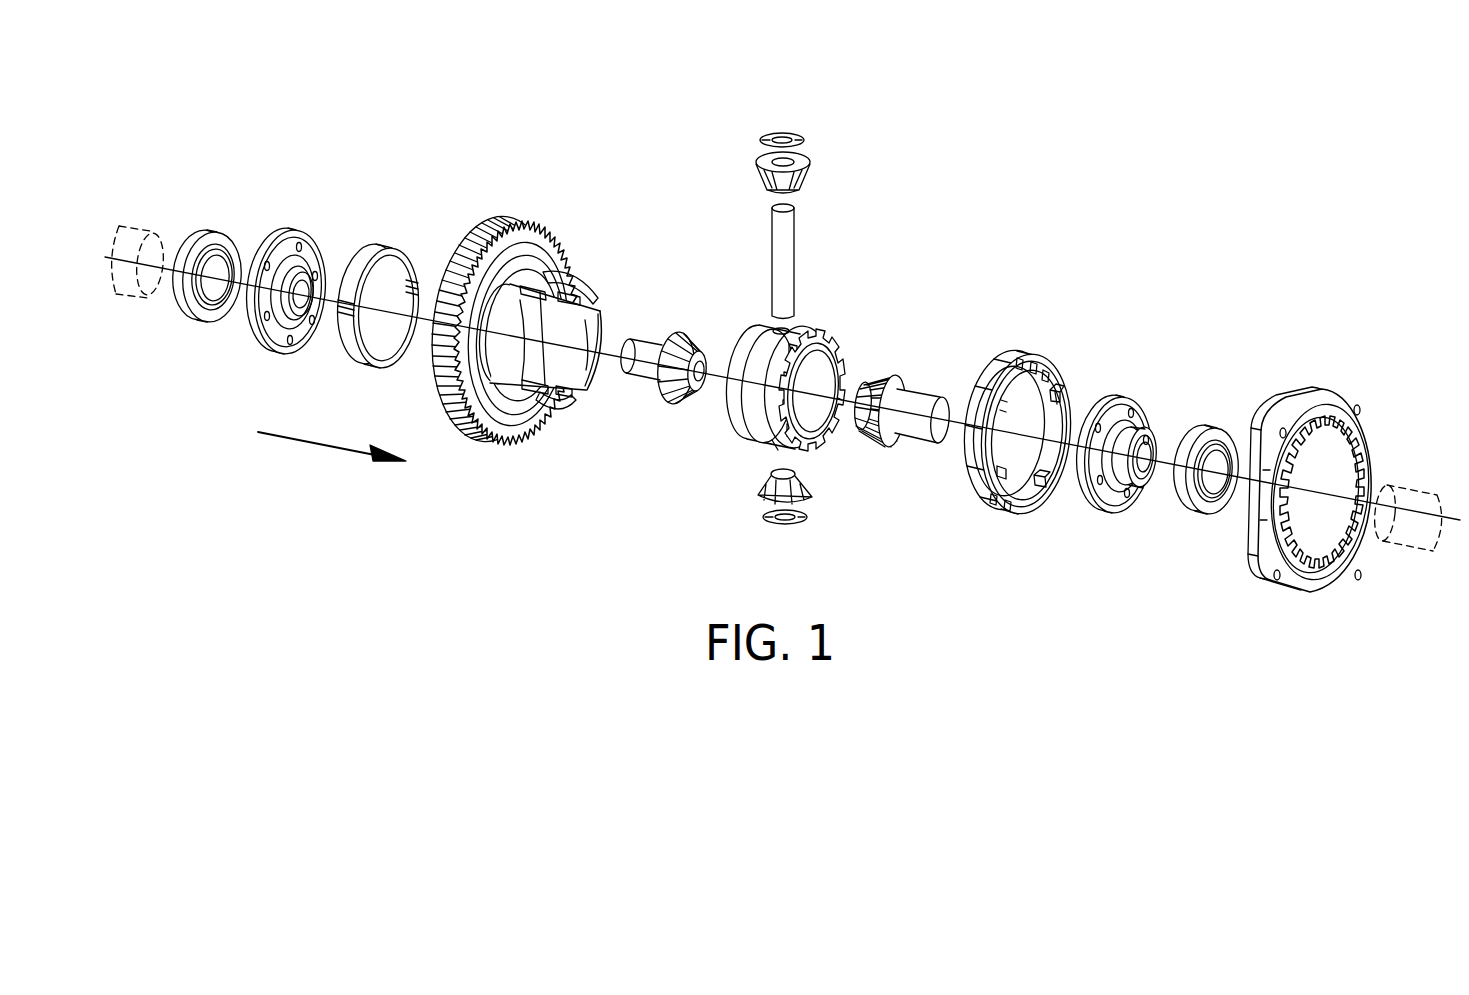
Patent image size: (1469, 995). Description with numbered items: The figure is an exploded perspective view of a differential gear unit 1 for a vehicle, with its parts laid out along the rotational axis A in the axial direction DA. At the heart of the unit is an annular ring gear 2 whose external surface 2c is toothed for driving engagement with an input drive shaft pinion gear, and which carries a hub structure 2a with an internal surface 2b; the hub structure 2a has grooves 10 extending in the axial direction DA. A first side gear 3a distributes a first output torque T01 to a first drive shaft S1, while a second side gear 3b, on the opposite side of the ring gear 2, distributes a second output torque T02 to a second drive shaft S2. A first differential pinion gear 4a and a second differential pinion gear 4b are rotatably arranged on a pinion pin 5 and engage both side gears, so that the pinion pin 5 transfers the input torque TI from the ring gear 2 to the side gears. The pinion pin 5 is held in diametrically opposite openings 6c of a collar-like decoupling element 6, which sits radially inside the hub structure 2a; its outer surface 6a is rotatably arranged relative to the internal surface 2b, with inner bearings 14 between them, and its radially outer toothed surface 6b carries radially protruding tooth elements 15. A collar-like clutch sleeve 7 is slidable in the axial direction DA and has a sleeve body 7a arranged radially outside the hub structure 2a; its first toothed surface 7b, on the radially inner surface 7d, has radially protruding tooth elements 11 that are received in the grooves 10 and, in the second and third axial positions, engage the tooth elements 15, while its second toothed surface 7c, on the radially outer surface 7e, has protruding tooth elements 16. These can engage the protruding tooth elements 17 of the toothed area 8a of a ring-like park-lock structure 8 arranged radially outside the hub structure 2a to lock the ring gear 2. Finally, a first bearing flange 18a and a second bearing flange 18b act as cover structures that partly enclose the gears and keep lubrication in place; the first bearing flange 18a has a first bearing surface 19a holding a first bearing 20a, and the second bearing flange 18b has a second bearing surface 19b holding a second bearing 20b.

The differential gear unit 1 is at (660, 94).
The ring gear 2 is at (548, 304).
The hub structure 2a is at (581, 372).
The internal surface 2b is at (583, 328).
The external surface 2c is at (566, 206).
The first side gear 3a is at (641, 372).
The second side gear 3b is at (908, 425).
The first differential pinion gear 4a is at (808, 160).
The second differential pinion gear 4b is at (812, 497).
The pinion pin 5 is at (785, 262).
The decoupling element 6 is at (805, 379).
The outer surface 6a is at (806, 338).
The radially outer toothed surface 6b is at (770, 432).
The openings 6c is at (782, 335).
The clutch sleeve 7 is at (1060, 433).
The sleeve body 7a is at (988, 367).
The first toothed surface 7b is at (1050, 467).
The second toothed surface 7c is at (1028, 352).
The radially inner surface 7d is at (1022, 497).
The radially outer surface 7e is at (1053, 400).
The park-lock structure 8 is at (1339, 487).
The toothed area 8a is at (1333, 577).
The grooves 10 is at (540, 297).
The radially protruding tooth elements 11 is at (1062, 398).
The inner bearings 14 is at (375, 250).
The radially protruding tooth elements 15 is at (825, 445).
The protruding tooth elements 16 is at (1003, 508).
The protruding tooth elements 17 is at (1368, 447).
The first bearing flange 18a is at (307, 246).
The second bearing flange 18b is at (1135, 405).
The first bearing surface 19a is at (250, 293).
The second bearing surface 19b is at (1122, 470).
The first bearing 20a is at (218, 231).
The second bearing 20b is at (1203, 433).
The rotational axis A is at (1247, 482).
The axial direction DA is at (332, 464).
The first drive shaft S1 is at (165, 224).
The first output torque T01 is at (140, 228).
The second drive shaft S2 is at (1420, 557).
The second output torque T02 is at (1412, 540).
The input torque TI is at (484, 205).